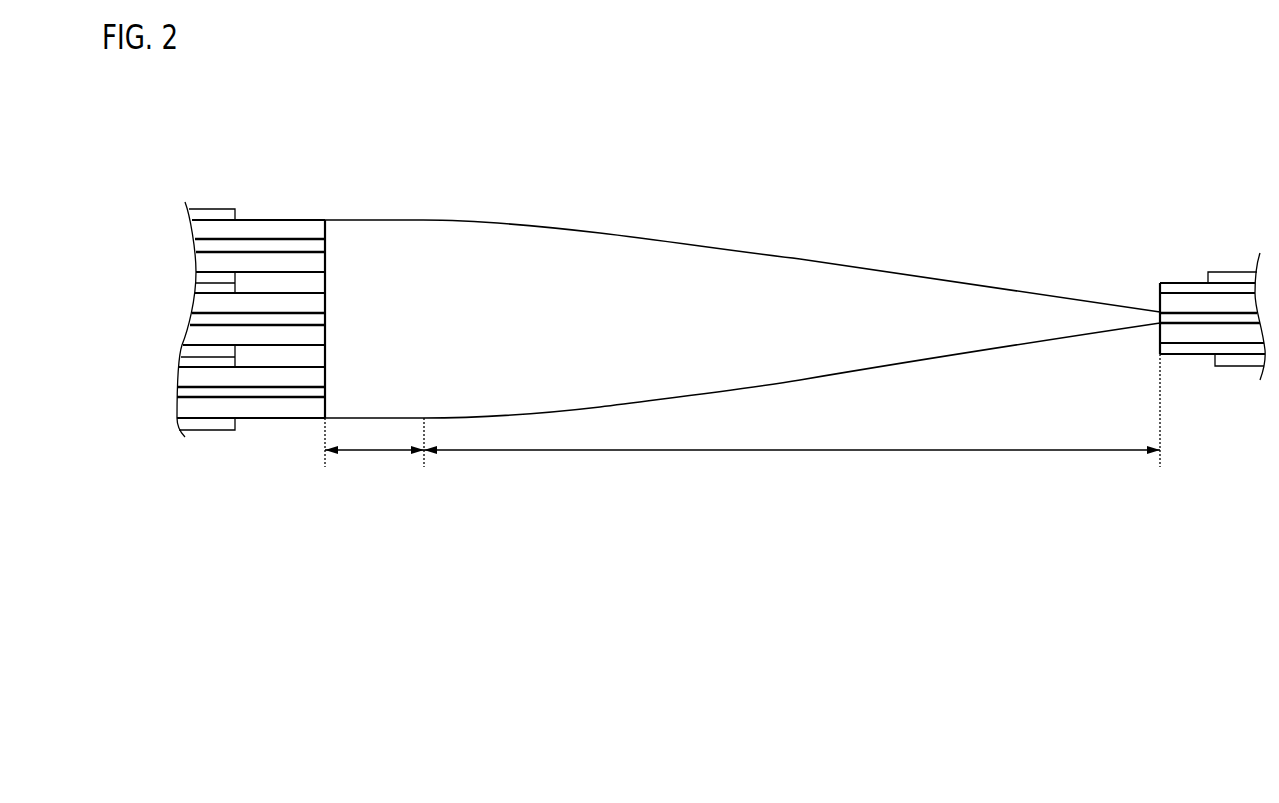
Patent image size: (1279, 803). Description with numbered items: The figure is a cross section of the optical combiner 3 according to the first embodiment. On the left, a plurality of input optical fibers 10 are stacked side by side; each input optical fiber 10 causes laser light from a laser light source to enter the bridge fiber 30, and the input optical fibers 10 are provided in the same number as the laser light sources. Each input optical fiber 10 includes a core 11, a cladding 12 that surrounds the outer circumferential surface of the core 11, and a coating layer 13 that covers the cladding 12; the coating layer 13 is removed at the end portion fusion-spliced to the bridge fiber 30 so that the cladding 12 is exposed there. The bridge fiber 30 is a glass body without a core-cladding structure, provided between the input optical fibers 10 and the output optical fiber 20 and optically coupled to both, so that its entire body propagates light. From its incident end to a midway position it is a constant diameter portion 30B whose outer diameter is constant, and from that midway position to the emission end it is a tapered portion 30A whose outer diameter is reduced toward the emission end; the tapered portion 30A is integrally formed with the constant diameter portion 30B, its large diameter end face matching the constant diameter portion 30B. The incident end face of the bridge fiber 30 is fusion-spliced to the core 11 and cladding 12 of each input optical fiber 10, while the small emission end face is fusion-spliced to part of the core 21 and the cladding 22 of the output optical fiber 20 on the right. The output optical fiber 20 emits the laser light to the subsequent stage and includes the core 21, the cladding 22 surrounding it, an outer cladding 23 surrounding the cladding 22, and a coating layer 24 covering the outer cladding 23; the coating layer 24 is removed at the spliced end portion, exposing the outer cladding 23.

The optical combiner 3 is at (1123, 120).
The input optical fiber 10 is at (158, 246).
The core 11 is at (290, 242).
The cladding 12 is at (253, 230).
The coating layer 13 is at (213, 217).
The output optical fiber 20 is at (1209, 388).
The core 21 is at (1167, 316).
The cladding 22 is at (1195, 302).
The outer cladding 23 is at (1221, 287).
The coating layer 24 is at (1247, 276).
The bridge fiber 30 is at (722, 263).
The tapered portion 30A is at (793, 452).
The constant diameter portion 30B is at (375, 453).